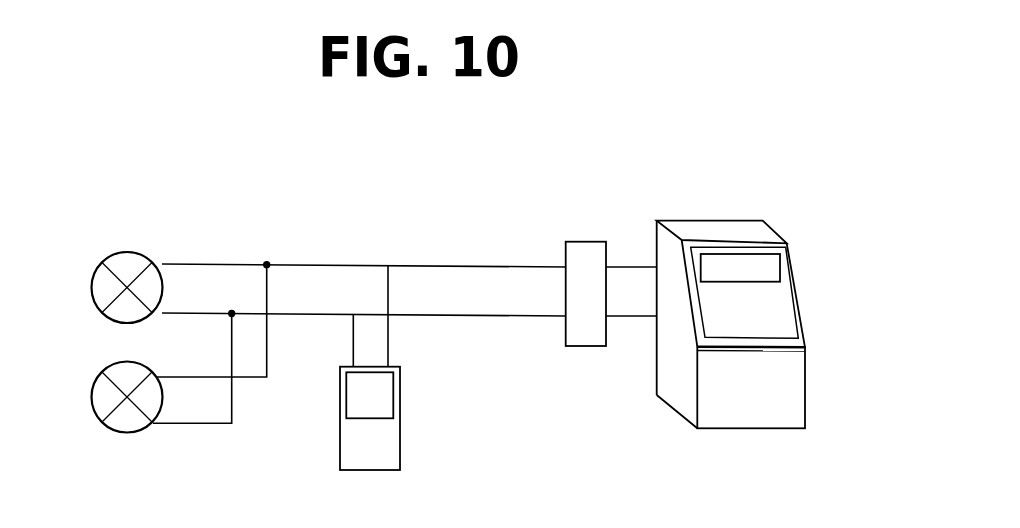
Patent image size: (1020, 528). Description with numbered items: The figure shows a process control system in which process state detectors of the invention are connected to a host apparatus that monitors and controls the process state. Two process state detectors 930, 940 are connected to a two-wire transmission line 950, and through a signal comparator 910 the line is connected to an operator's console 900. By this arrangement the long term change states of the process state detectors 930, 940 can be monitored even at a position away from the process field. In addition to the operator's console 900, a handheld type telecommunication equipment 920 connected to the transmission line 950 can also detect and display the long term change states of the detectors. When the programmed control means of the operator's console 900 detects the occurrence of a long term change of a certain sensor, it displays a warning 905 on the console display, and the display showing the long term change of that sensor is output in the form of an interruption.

The operator's console 900 is at (728, 220).
The warning 905 is at (780, 267).
The signal comparator 910 is at (590, 241).
The handheld type telecommunication equipment 920 is at (400, 400).
The process state detector 930 is at (137, 252).
The process state detector 940 is at (152, 353).
The two-wire transmission line 950 is at (480, 266).